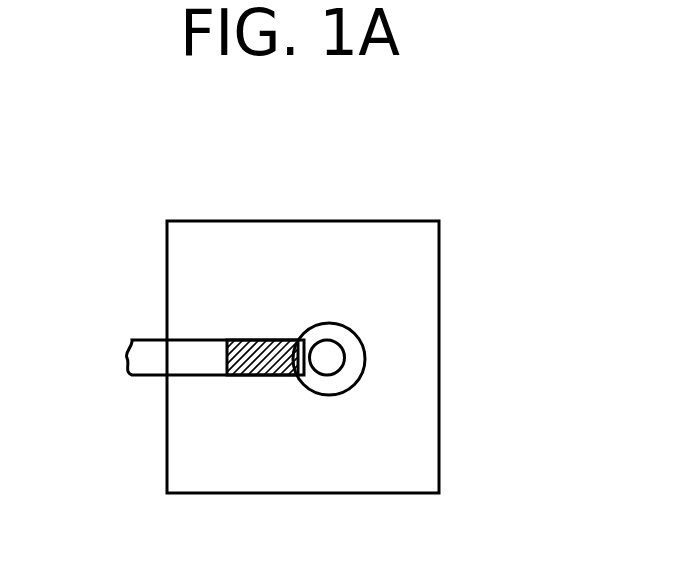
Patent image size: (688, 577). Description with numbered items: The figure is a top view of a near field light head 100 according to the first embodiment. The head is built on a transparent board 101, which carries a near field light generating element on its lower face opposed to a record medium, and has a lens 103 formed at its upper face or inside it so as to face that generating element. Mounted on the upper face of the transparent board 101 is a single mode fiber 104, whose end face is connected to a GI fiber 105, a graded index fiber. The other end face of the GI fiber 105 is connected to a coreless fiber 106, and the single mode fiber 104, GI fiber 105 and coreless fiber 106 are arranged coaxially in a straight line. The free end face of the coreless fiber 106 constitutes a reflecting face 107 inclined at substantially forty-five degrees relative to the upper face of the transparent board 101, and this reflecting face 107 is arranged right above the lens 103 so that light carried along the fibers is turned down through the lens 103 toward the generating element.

The near field light head 100 is at (123, 104).
The transparent board 101 is at (408, 267).
The lens 103 is at (342, 335).
The single mode fiber 104 is at (163, 362).
The GI fiber 105 is at (238, 338).
The coreless fiber 106 is at (302, 333).
The reflecting face 107 is at (325, 357).